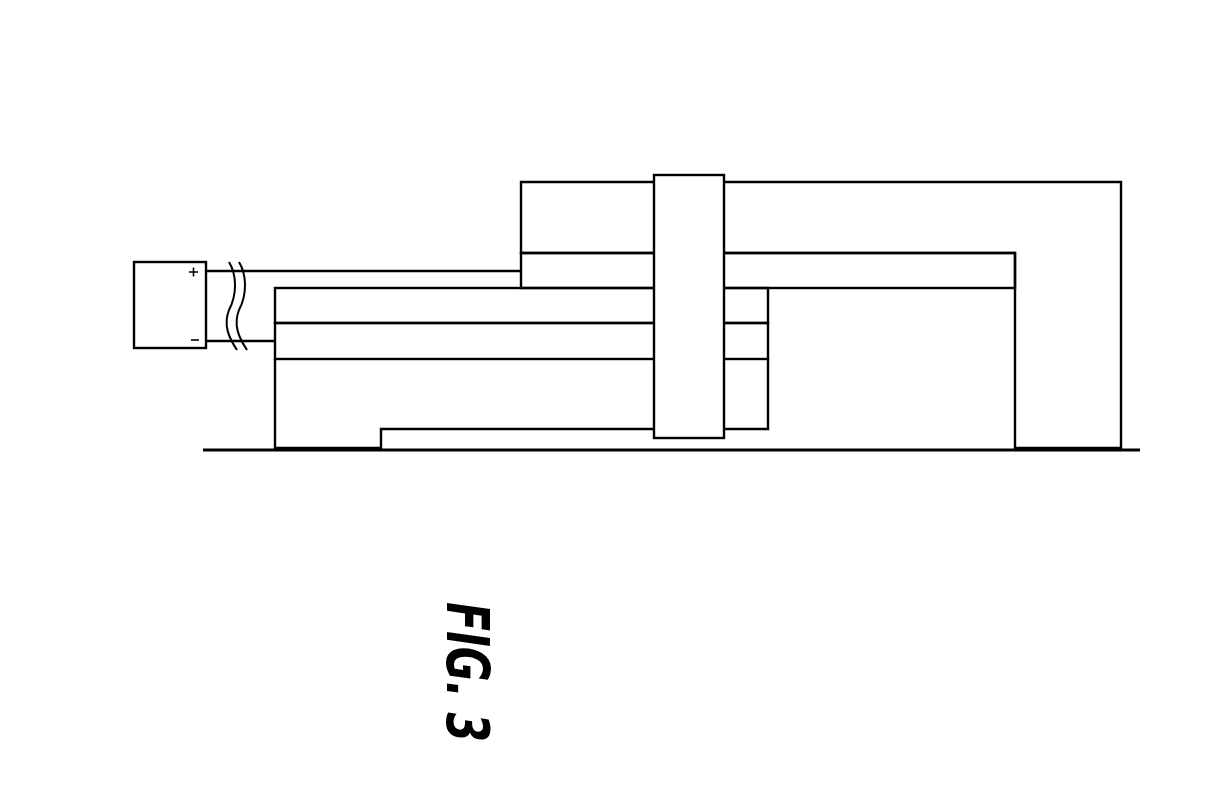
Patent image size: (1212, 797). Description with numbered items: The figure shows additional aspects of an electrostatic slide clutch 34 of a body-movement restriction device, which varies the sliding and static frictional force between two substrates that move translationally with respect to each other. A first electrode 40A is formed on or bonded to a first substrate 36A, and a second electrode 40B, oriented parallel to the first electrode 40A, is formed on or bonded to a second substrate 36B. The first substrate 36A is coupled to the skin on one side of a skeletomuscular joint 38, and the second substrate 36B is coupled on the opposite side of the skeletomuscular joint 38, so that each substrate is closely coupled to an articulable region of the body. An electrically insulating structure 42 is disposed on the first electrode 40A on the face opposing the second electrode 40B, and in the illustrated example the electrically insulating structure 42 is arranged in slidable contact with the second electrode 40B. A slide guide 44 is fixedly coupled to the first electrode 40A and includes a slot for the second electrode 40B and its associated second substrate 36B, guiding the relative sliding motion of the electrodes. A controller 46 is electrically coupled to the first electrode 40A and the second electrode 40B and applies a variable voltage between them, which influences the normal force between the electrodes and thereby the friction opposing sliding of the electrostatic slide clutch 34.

The electrostatic slide clutch 34 is at (216, 111).
The first substrate 36A is at (612, 403).
The second substrate 36B is at (997, 232).
The skeletomuscular joint 38 is at (912, 545).
The first electrode 40A is at (612, 351).
The second electrode 40B is at (995, 283).
The electrically insulating structure 42 is at (635, 316).
The slide guide 44 is at (695, 175).
The controller 46 is at (252, 221).